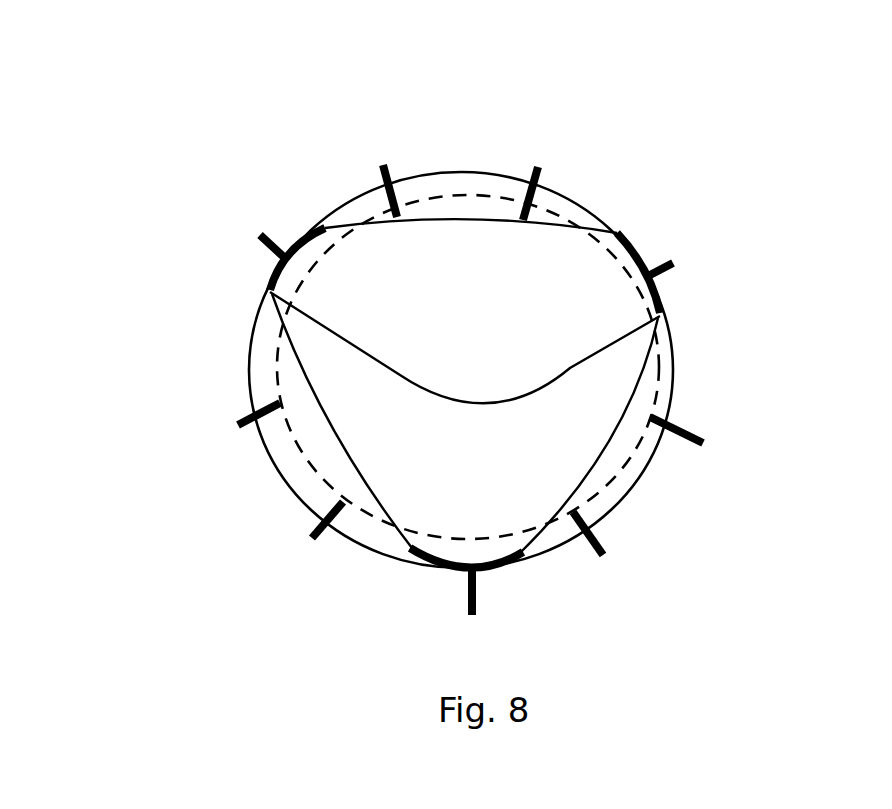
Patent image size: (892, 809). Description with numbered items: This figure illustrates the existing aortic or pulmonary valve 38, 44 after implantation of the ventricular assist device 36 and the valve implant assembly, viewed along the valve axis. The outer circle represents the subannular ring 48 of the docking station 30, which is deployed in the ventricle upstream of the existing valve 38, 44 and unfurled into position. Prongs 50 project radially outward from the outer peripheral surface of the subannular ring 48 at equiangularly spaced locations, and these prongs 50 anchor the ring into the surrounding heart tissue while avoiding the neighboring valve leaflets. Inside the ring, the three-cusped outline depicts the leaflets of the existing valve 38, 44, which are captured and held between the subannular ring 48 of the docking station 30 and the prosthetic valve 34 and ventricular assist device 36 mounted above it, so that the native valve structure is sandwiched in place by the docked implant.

The docking station 30 is at (427, 298).
The subannular ring 48 is at (422, 172).
The prosthetic valve 34 is at (497, 318).
The ventricular assist device 36 is at (527, 275).
The pulmonary valve 38 is at (391, 322).
The aortic valve 44 is at (391, 322).
The prongs 50 is at (262, 237).